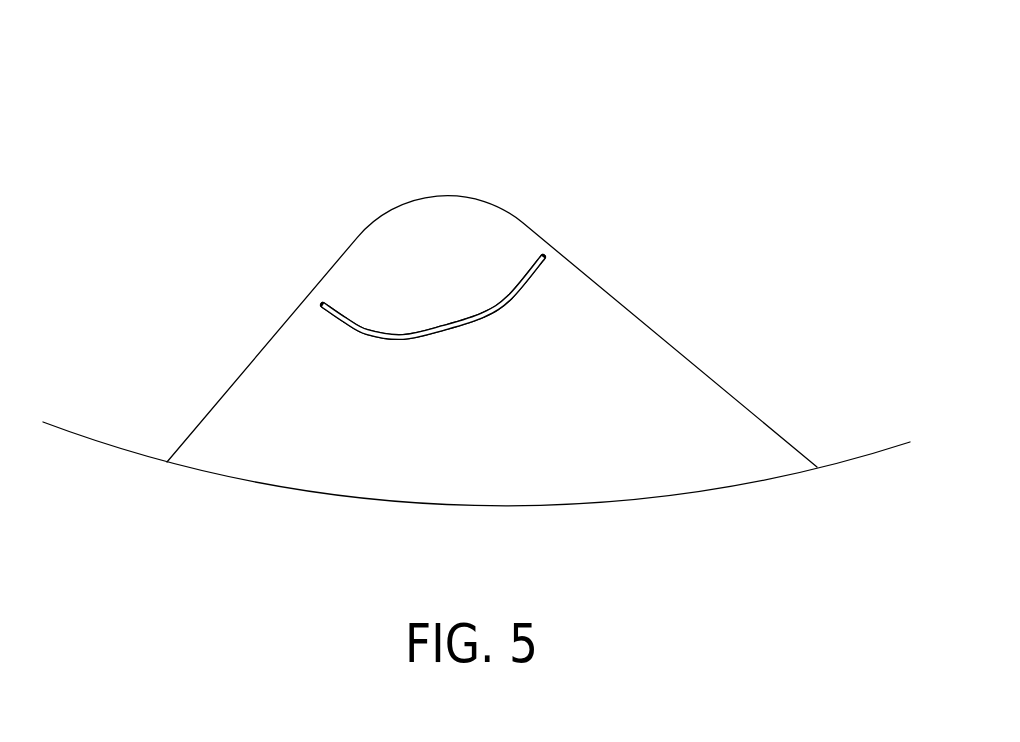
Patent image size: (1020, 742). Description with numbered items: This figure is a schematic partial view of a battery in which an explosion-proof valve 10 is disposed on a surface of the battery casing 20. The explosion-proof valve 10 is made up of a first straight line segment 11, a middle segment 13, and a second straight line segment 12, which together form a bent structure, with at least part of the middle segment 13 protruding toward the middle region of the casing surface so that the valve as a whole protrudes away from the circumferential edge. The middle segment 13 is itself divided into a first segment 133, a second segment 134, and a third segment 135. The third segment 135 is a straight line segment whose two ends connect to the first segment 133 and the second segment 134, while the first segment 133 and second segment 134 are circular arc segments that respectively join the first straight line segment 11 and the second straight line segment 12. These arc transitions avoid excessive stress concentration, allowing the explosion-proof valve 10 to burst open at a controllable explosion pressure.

The explosion-proof valve 10 is at (437, 358).
The battery casing 20 is at (252, 423).
The middle segment 13 is at (440, 50).
The first segment 133 is at (368, 328).
The third segment 135 is at (445, 326).
The second segment 134 is at (503, 300).
The first straight line segment 11 is at (321, 302).
The second straight line segment 12 is at (546, 249).